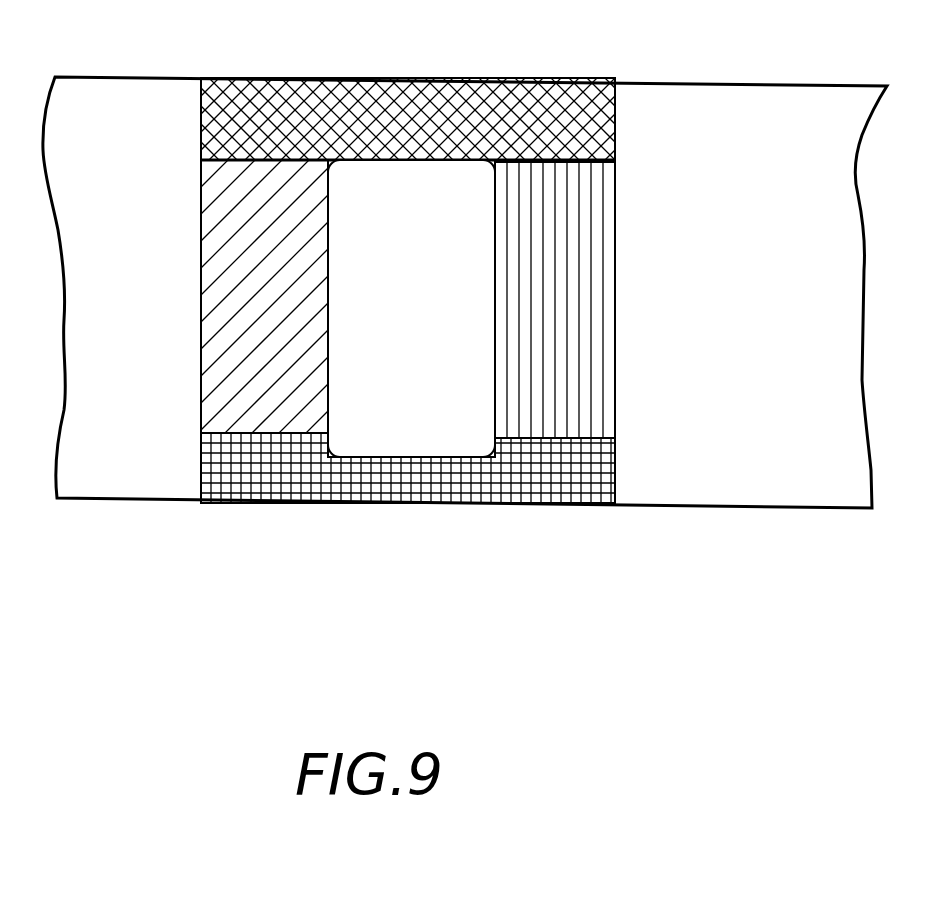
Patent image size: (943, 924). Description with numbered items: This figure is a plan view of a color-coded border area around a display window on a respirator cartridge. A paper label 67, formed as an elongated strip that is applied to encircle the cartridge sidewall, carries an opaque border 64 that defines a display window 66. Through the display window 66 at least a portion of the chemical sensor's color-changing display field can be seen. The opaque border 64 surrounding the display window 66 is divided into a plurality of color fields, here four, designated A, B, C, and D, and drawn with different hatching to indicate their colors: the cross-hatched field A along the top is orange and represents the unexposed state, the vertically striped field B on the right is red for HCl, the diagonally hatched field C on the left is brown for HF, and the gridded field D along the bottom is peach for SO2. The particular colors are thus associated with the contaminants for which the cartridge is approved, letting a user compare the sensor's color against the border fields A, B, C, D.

The paper label 67 is at (122, 106).
The opaque border 64 is at (357, 117).
The display window 66 is at (492, 190).
The color field A is at (574, 115).
The color field B is at (570, 288).
The color field C is at (237, 285).
The color field D is at (428, 488).